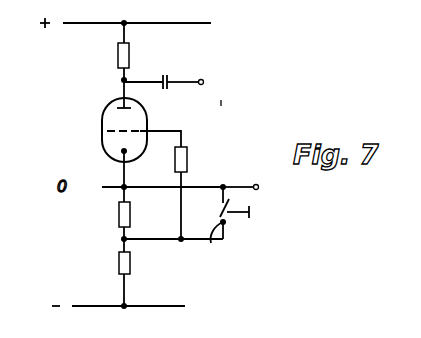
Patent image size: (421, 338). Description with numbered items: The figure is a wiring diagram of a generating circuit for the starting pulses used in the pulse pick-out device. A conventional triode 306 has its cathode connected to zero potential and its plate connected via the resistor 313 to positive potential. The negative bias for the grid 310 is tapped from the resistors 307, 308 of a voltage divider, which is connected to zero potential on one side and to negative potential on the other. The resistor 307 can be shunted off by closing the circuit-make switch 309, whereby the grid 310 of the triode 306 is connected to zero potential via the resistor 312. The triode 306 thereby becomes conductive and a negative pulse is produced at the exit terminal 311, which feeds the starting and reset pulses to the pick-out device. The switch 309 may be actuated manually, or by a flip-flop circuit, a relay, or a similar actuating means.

The resistor 313 is at (118, 59).
The triode 306 is at (102, 106).
The grid 310 is at (142, 131).
The resistor 312 is at (186, 161).
The exit terminal 311 is at (204, 80).
The resistor 307 is at (119, 215).
The resistor 308 is at (119, 262).
The circuit-make switch 309 is at (219, 241).